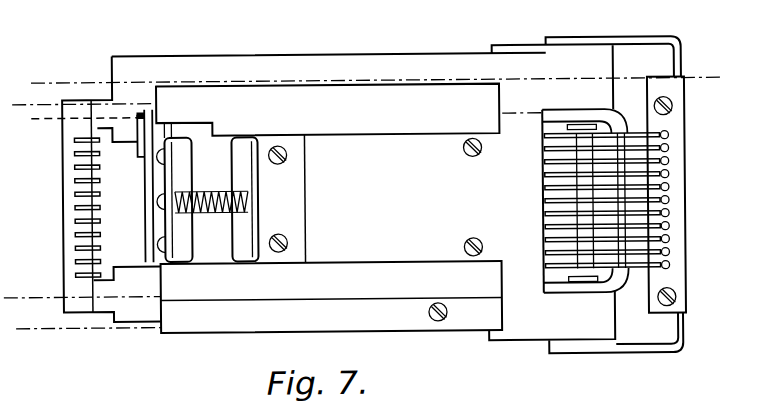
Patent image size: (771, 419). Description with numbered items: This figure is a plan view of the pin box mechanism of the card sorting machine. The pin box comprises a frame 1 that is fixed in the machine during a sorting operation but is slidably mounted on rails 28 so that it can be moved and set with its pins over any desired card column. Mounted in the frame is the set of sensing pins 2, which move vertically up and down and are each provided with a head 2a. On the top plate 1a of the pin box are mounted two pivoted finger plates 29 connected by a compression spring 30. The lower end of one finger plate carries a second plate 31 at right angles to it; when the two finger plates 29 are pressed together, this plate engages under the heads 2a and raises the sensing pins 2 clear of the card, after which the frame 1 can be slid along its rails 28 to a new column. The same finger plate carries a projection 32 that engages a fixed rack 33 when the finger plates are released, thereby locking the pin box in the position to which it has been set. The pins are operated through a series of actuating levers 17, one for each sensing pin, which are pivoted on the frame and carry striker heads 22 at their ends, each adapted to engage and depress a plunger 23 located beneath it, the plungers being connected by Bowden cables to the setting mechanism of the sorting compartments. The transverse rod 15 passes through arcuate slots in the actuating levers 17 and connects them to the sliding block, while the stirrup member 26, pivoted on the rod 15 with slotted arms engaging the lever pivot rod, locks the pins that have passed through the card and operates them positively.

The frame 1 is at (295, 57).
The top plate 1a is at (342, 140).
The sensing pins 2 is at (62, 206).
The heads 2a is at (78, 164).
The second plate 31 is at (110, 210).
The rails 28 is at (55, 89).
The fixed rack 33 is at (60, 98).
The projection 32 is at (143, 108).
The finger plates 29 is at (240, 146).
The compression spring 30 is at (222, 212).
The actuating levers 17 is at (548, 136).
The second transverse rod 15 is at (587, 270).
The striker heads 22 is at (642, 185).
The plungers 23 is at (665, 135).
The stirrup member 26 is at (627, 124).